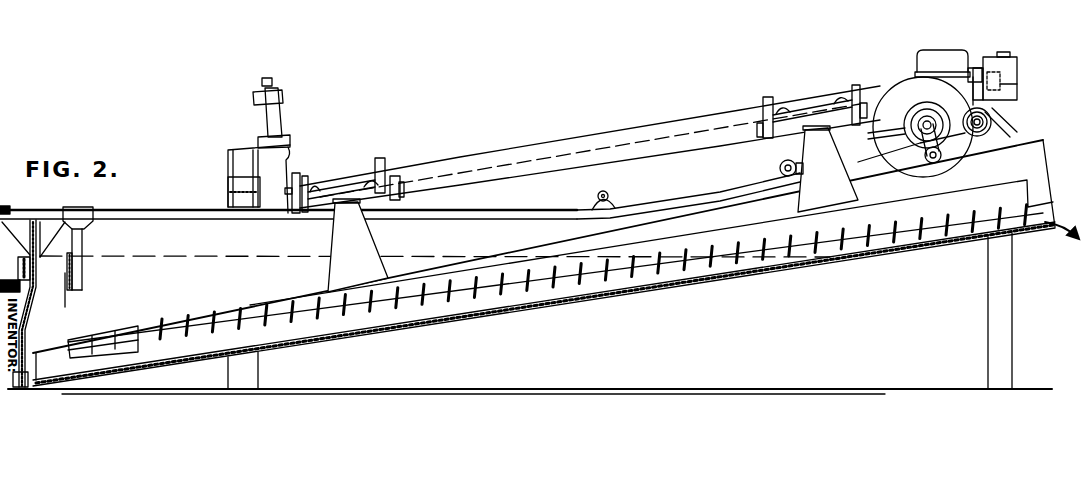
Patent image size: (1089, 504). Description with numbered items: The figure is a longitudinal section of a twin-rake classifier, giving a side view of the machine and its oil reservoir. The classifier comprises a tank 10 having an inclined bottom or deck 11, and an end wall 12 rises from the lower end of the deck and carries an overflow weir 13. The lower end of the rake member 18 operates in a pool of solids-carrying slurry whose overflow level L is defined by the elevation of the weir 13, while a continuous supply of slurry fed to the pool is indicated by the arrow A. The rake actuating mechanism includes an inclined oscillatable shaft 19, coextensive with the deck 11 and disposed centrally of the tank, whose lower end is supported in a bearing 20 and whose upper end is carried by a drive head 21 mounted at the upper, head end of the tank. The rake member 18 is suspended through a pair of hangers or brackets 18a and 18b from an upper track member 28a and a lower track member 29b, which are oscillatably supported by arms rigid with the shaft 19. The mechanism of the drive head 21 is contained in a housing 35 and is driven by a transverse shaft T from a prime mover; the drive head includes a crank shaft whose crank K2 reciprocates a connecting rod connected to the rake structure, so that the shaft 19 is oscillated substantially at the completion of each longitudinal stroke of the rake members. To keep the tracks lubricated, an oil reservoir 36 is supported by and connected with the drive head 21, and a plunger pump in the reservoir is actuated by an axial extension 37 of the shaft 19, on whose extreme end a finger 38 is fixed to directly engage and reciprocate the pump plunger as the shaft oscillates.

The tank 10 is at (178, 370).
The inclined bottom or deck 11 is at (668, 290).
The end wall 12 is at (32, 322).
The overflow weir 13 is at (30, 268).
The rake member 18 is at (578, 282).
The hanger or bracket 18a is at (807, 151).
The hanger or bracket 18b is at (345, 259).
The inclined oscillatable shaft 19 is at (603, 142).
The bearing 20 is at (282, 198).
The drive head 21 is at (976, 60).
The upper track member 28a is at (818, 122).
The lower track member 29b is at (357, 183).
The housing 35 is at (888, 102).
The oil reservoir 36 is at (1010, 96).
The axial extension 37 is at (998, 57).
The finger 38 is at (1000, 78).
The arrow A is at (181, 200).
The overflow level L is at (163, 258).
The transverse shaft T is at (982, 114).
The crank K2 is at (944, 160).